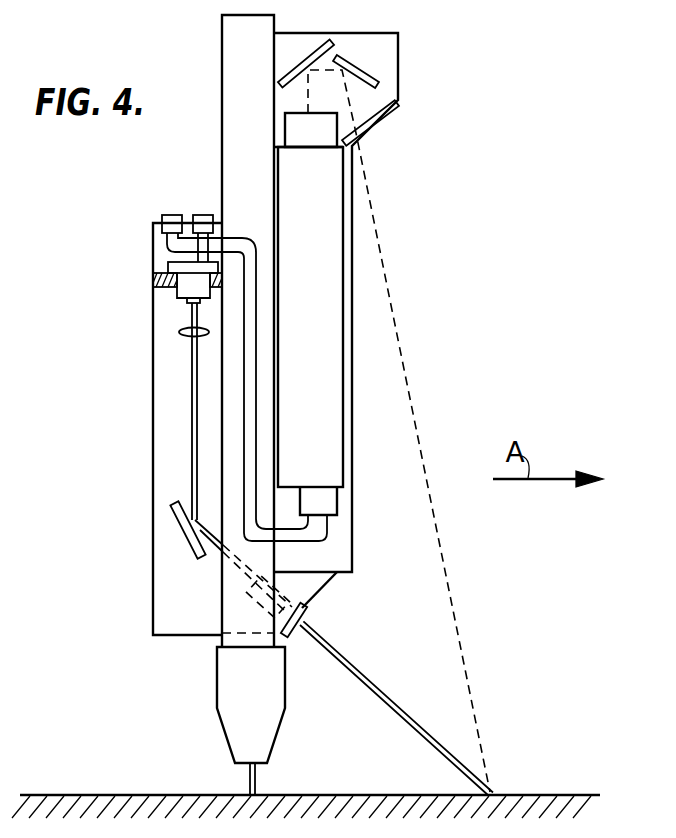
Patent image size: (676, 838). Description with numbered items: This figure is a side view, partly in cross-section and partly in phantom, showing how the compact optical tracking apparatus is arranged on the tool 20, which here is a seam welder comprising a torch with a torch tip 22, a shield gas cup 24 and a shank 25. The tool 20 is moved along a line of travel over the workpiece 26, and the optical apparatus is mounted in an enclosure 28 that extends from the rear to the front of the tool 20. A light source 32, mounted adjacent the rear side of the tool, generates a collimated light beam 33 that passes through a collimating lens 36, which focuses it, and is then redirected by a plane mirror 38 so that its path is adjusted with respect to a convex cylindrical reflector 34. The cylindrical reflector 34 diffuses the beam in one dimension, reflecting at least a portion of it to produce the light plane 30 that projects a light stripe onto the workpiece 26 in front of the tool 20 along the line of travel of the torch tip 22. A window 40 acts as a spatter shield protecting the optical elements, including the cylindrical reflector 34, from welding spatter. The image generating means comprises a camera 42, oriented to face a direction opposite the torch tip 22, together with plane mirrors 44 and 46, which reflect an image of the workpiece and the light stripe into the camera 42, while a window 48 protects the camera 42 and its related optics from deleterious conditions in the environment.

The tool 20 is at (183, 656).
The torch tip 22 is at (249, 785).
The shield gas cup 24 is at (217, 698).
The shank 25 is at (222, 178).
The workpiece 26 is at (300, 793).
The enclosure 28 is at (155, 386).
The light plane 30 is at (364, 684).
The light source 32 is at (178, 290).
The collimated light beam 33 is at (191, 432).
The convex cylindrical reflector 34 is at (295, 598).
The collimating lens 36 is at (178, 332).
The plane mirror 38 is at (173, 513).
The window 40 is at (307, 624).
The camera 42 is at (328, 135).
The plane mirror 44 is at (302, 58).
The plane mirror 46 is at (372, 72).
The window 48 is at (388, 117).